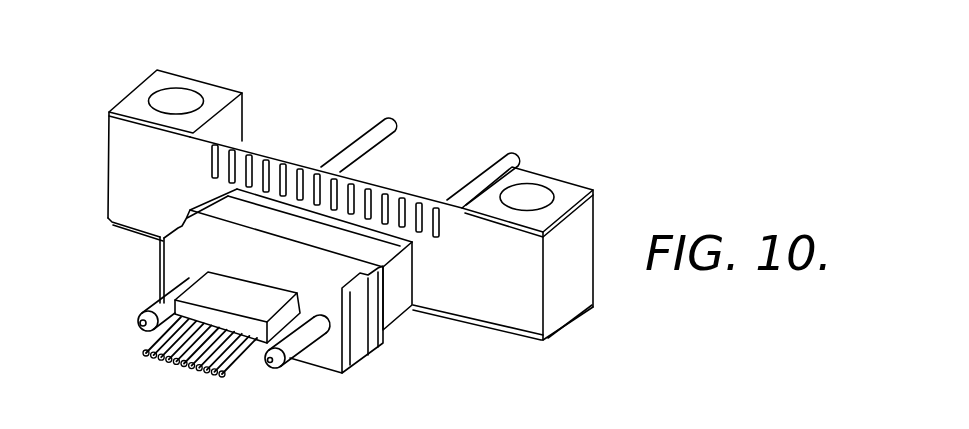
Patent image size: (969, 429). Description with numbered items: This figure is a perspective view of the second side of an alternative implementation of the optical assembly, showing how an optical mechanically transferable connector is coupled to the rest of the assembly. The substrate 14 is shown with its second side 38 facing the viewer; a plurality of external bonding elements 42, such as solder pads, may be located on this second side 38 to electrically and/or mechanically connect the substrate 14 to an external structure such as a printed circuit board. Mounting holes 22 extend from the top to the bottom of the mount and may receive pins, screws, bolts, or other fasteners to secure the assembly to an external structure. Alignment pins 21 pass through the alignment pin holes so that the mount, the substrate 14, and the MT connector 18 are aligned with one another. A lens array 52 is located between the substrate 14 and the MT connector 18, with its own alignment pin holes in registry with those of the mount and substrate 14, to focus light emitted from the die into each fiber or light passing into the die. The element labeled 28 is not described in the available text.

The substrate 14 is at (322, 191).
The optical mechanically transferable (MT) connector 18 is at (327, 357).
The alignment pins 21 is at (507, 158).
The mounting holes 22 is at (158, 100).
The mounting flange top face 28 is at (177, 82).
The second side 38 is at (523, 300).
The external bonding elements 42 is at (282, 165).
The lens array 52 is at (408, 268).